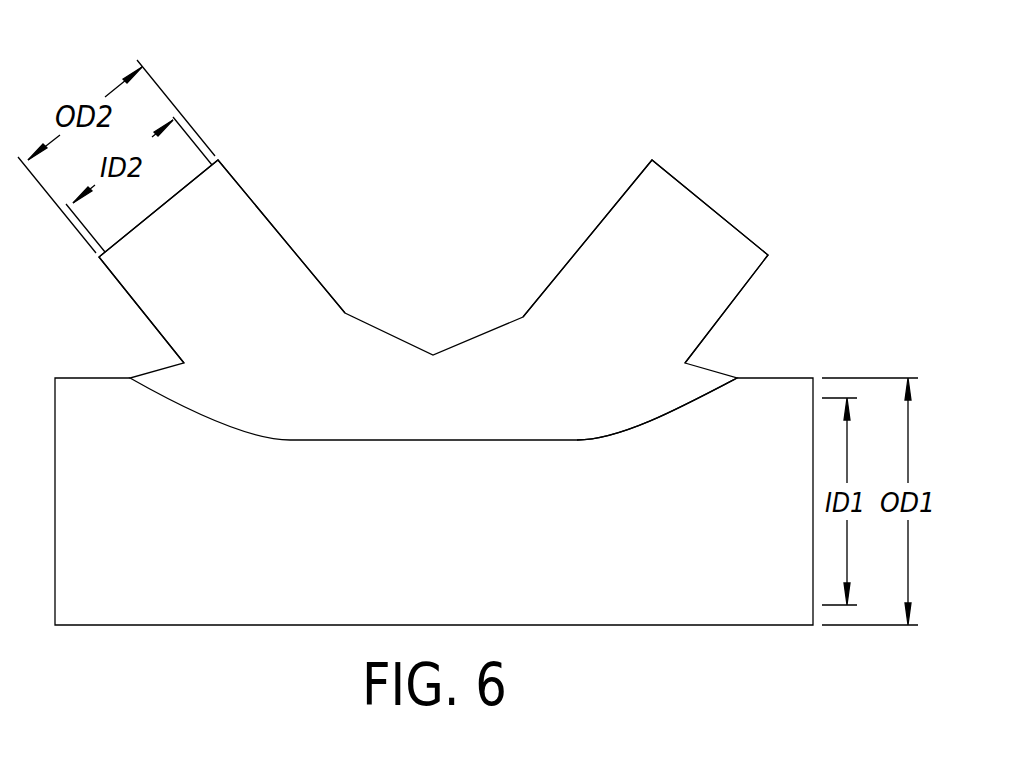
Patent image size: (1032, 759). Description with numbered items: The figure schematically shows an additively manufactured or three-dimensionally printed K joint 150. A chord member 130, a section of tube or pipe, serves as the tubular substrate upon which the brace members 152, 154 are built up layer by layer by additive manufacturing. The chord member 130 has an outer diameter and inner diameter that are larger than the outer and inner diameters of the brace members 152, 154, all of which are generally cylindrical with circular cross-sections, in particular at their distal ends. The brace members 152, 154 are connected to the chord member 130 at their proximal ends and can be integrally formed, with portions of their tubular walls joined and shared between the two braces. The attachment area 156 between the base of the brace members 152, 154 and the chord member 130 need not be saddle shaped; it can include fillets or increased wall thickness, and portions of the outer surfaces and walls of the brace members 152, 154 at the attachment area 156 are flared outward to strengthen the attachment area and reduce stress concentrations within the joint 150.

The chord member 130 is at (88, 627).
The K joint 150 is at (490, 177).
The brace member 152 is at (272, 222).
The brace member 154 is at (707, 207).
The attachment area 156 is at (737, 380).